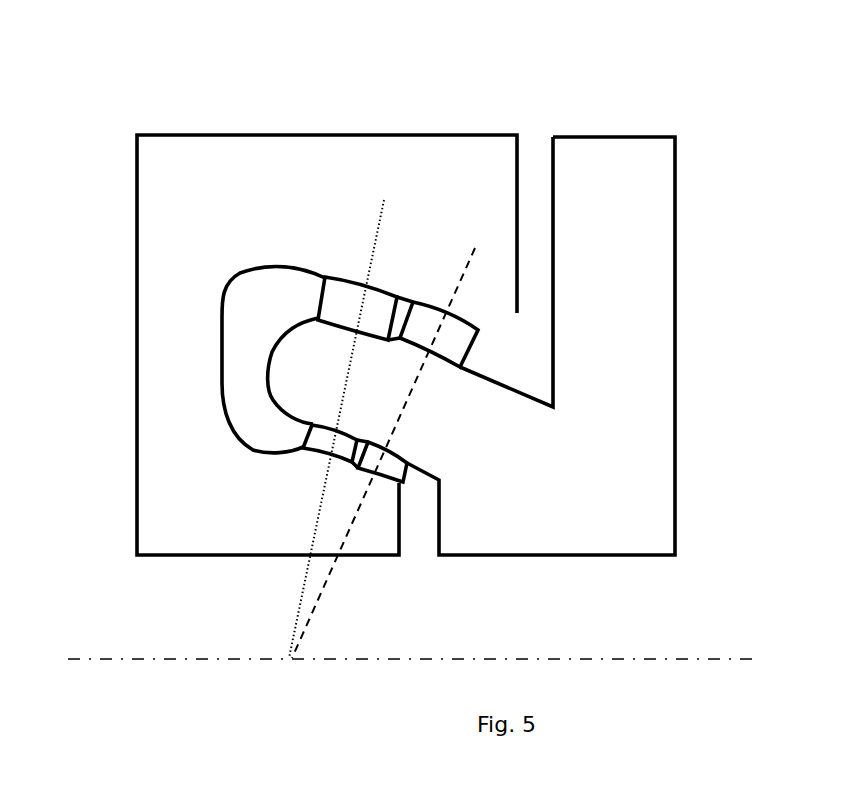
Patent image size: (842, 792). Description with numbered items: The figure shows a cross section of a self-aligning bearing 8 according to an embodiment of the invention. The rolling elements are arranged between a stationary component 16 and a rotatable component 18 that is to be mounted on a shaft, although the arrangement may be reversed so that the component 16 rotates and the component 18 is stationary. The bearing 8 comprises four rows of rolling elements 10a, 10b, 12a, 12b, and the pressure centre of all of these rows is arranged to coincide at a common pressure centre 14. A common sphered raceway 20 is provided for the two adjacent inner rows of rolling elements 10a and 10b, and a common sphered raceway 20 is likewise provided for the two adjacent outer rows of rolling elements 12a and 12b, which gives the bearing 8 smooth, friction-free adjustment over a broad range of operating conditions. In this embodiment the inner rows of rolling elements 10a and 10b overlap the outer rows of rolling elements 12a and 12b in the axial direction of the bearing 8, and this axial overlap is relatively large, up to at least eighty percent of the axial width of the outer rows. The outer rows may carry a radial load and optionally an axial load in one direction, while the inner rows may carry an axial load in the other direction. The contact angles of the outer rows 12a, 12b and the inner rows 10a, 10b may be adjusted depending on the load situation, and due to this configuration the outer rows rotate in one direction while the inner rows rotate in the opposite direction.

The self-aligning bearing 8 is at (184, 80).
The stationary component 16 is at (338, 162).
The rotatable component 18 is at (662, 238).
The inner row of rolling elements 10a is at (318, 437).
The inner row of rolling elements 10b is at (399, 462).
The outer row of rolling elements 12a is at (357, 278).
The outer row of rolling elements 12b is at (432, 302).
The common sphered raceway 20 is at (303, 452).
The common pressure centre 14 is at (255, 637).